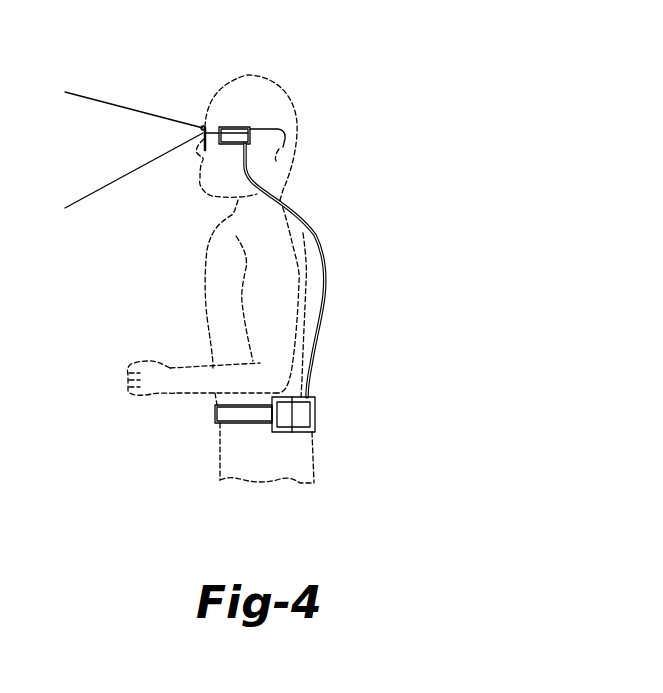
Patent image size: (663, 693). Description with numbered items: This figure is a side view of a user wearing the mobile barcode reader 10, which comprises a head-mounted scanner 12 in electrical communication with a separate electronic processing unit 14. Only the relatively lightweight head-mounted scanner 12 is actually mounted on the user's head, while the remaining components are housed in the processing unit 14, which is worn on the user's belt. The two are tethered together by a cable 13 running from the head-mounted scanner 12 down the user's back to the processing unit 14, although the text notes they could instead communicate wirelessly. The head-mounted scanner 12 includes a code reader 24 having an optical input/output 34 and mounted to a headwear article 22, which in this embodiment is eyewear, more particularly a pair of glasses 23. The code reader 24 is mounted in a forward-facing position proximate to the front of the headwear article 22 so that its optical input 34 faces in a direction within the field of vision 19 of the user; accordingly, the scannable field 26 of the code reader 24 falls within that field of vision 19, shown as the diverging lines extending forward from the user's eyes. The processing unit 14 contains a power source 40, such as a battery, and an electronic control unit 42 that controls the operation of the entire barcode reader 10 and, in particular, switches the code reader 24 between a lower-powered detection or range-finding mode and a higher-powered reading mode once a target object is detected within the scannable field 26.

The mobile barcode reader 10 is at (370, 224).
The head-mounted scanner 12 is at (222, 111).
The cable 13 is at (326, 287).
The electronic processing unit 14 is at (311, 419).
The field of vision 19 is at (92, 96).
The headwear article 22 is at (317, 132).
The pair of glasses 23 is at (283, 136).
The code reader 24 is at (230, 125).
The scannable field 26 is at (131, 111).
The optical input/output 34 is at (203, 127).
The power source 40 is at (288, 432).
The electronic control unit 42 is at (302, 415).